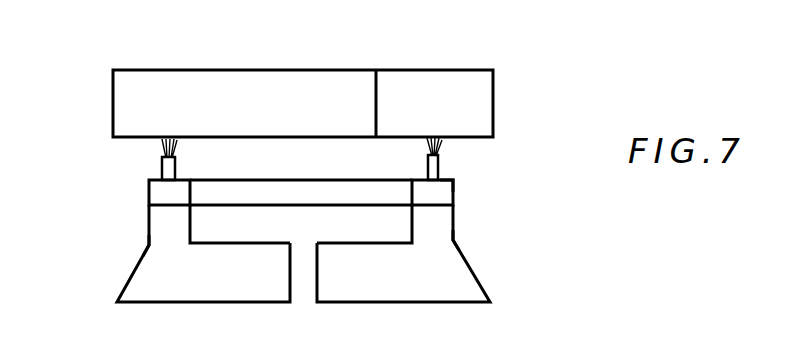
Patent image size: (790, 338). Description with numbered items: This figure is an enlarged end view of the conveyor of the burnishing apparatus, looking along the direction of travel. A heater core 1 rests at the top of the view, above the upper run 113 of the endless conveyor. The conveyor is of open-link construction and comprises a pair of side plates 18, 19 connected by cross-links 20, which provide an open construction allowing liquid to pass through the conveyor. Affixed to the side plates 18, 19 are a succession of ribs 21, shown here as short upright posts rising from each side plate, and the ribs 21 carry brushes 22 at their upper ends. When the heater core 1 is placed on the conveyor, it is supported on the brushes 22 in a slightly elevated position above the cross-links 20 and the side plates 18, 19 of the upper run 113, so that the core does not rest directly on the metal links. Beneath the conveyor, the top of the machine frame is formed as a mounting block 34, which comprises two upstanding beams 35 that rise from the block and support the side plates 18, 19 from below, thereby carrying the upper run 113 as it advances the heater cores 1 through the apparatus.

The heater core 1 is at (310, 87).
The side plate 18 is at (163, 190).
The side plate 19 is at (432, 190).
The cross-links 20 is at (321, 194).
The rib 21 is at (177, 168).
The brush 22 is at (160, 149).
The mounting block 34 is at (458, 284).
The upstanding beam 35 is at (147, 236).
The upper run 113 is at (460, 175).